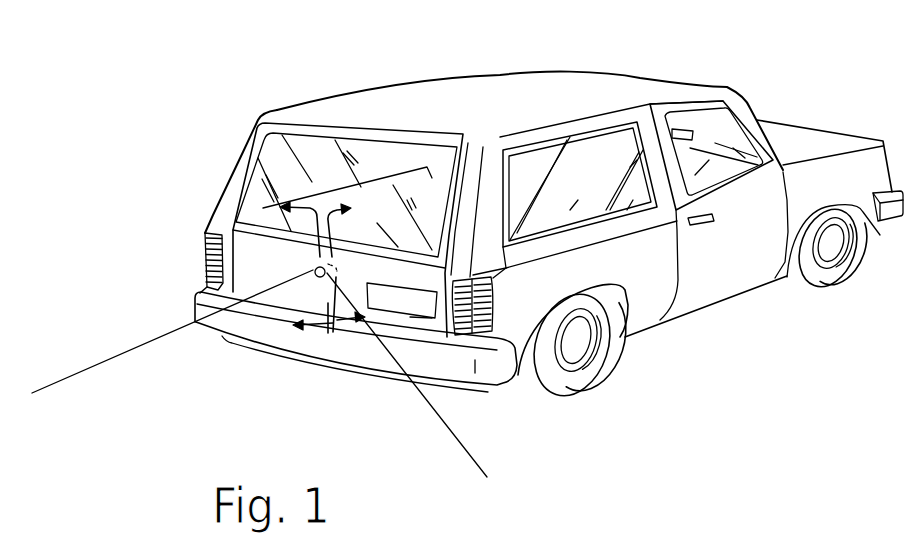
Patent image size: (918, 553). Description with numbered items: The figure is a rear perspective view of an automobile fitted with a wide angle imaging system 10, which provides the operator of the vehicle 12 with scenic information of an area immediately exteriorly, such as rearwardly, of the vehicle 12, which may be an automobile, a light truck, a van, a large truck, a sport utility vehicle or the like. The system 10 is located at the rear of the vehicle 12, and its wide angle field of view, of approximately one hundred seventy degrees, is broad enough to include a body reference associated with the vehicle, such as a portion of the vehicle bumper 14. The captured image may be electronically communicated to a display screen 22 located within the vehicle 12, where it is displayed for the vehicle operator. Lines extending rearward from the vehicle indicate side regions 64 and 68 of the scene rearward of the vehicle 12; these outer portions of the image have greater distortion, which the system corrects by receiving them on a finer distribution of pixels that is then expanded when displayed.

The wide angle imaging system 10 is at (278, 260).
The vehicle 12 is at (498, 231).
The vehicle bumper 14 is at (368, 353).
The display screen 22 is at (693, 139).
The side region 64 is at (430, 407).
The side region 68 is at (97, 367).